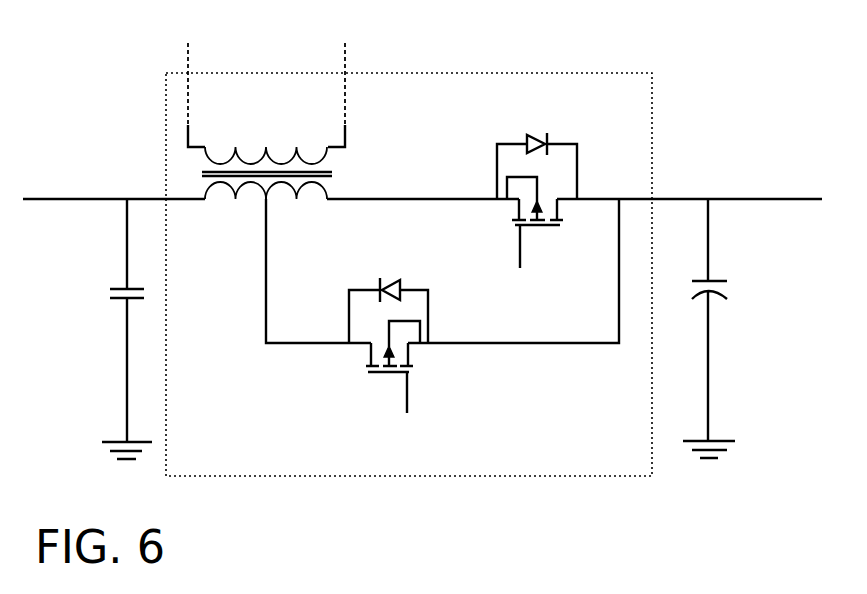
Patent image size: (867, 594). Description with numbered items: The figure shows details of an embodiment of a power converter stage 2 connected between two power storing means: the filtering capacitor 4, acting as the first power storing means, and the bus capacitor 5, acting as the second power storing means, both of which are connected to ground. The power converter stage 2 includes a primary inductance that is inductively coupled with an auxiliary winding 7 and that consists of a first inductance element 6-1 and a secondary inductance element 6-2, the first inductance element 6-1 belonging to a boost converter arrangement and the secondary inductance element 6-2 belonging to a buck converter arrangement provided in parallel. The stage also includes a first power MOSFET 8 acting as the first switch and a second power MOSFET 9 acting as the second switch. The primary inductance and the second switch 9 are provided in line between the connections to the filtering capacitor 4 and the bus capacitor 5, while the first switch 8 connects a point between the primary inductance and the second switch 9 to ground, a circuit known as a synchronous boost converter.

The power converter stage 2 is at (651, 157).
The filtering capacitor 4 is at (120, 289).
The bus capacitor 5 is at (717, 281).
The first inductance element 6-1 is at (204, 196).
The secondary inductance element 6-2 is at (330, 186).
The auxiliary winding 7 is at (347, 131).
The first power MOSFET 8 is at (422, 274).
The second power MOSFET 9 is at (533, 131).